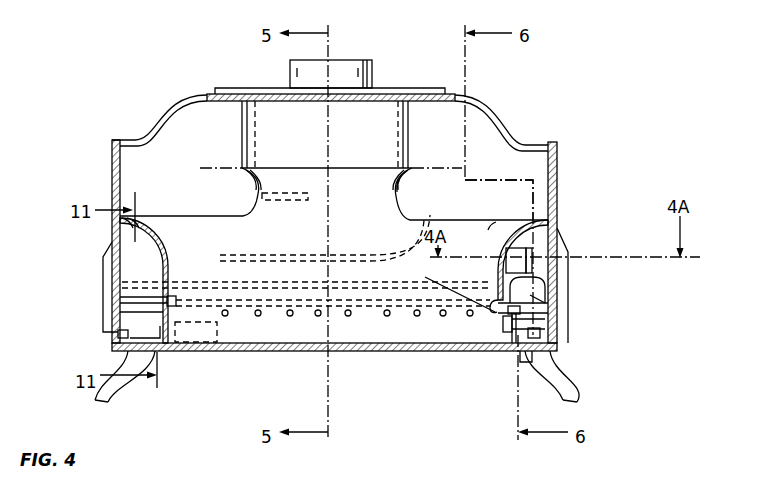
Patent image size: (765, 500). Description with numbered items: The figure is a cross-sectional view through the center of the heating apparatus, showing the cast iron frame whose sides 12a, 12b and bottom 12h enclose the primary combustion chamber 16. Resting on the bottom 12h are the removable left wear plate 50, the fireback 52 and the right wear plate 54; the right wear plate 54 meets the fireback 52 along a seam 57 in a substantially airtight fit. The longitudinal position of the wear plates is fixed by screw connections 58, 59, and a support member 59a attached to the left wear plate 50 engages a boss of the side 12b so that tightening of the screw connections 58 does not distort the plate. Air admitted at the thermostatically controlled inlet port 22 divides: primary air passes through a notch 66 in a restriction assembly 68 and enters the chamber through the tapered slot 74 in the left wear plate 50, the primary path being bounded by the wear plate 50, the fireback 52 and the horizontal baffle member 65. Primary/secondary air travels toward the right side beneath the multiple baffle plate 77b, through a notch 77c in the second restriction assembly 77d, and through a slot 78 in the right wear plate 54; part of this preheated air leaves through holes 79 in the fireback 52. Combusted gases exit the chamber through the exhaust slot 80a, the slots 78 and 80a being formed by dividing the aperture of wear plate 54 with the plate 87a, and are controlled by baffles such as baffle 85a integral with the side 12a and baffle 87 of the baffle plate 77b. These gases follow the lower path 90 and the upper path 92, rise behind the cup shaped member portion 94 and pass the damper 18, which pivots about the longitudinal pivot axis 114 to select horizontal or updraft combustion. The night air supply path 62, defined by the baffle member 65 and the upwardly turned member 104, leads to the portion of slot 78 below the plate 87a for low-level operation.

The side 12a is at (557, 188).
The side 12b is at (112, 188).
The bottom 12h is at (220, 352).
The primary combustion chamber 16 is at (338, 320).
The damper 18 is at (378, 118).
The inlet port 22 is at (205, 331).
The left wear plate 50 is at (168, 250).
The fireback 52 is at (315, 234).
The right wear plate 54 is at (540, 226).
The seam 57 is at (500, 230).
The screw connection 58 is at (172, 296).
The screw connection 59 is at (503, 323).
The support member 59a is at (140, 297).
The night air supply path 62 is at (248, 291).
The horizontal baffle member 65 is at (200, 297).
The notch 66 is at (120, 333).
The restriction assembly 68 is at (122, 318).
The tapered slot 74 is at (147, 327).
The multiple baffle plate 77b is at (552, 313).
The notch 77c is at (552, 337).
The restriction assembly 77d is at (522, 362).
The slot 78 is at (447, 288).
The holes 79 is at (352, 316).
The exhaust slot 80a is at (497, 292).
The baffle 85a is at (542, 266).
The baffle 87 is at (540, 288).
The plate 87a is at (548, 301).
The lower path 90 is at (373, 280).
The upper path 92 is at (262, 250).
The cup shaped member portion 94 is at (405, 186).
The upwardly turned member 104 is at (545, 333).
The longitudinal pivot axis 114 is at (215, 167).